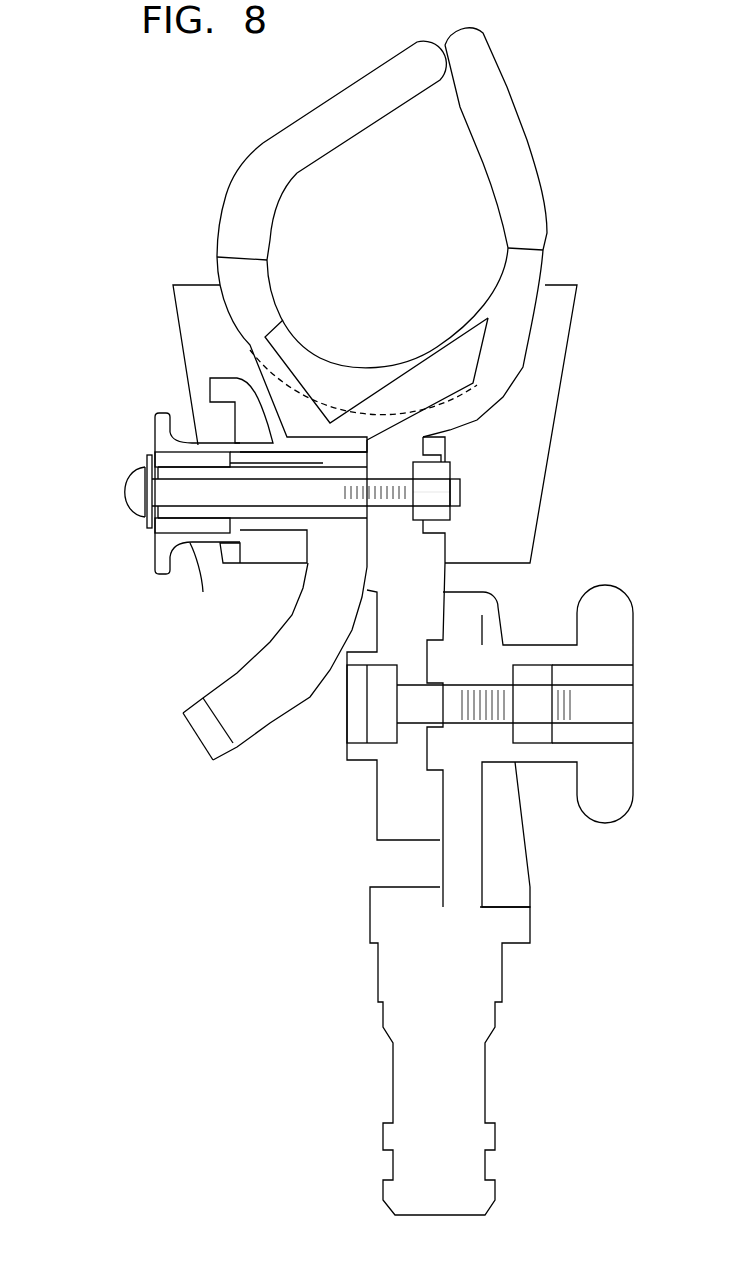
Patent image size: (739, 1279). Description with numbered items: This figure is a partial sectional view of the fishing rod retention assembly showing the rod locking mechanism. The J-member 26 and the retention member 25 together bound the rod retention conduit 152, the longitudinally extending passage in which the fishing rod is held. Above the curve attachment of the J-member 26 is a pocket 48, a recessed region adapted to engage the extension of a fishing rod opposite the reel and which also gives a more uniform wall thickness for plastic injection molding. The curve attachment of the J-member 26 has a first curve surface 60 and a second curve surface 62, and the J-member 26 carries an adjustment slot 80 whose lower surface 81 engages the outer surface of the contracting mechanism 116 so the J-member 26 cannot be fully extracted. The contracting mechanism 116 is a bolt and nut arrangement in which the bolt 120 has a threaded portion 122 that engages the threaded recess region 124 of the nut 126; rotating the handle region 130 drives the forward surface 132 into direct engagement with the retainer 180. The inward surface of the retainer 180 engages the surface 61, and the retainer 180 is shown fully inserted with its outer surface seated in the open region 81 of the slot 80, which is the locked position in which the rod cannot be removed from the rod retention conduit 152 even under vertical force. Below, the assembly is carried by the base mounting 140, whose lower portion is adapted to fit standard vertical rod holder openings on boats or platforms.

The retention member 25 is at (522, 268).
The J-member 26 is at (262, 183).
The pocket 48 is at (343, 390).
The first curve surface 60 is at (237, 672).
The surface 61 is at (235, 418).
The second curve surface 62 is at (272, 717).
The adjustment slot 80 is at (325, 639).
The lower surface 81 is at (223, 717).
The contracting mechanism 116 is at (153, 433).
The bolt 120 is at (140, 507).
The threaded portion 122 is at (460, 497).
The threaded recess region 124 is at (425, 500).
The nut 126 is at (445, 470).
The handle region 130 is at (138, 486).
The forward surface 132 is at (173, 515).
The base mounting 140 is at (510, 928).
The rod retention conduit 152 is at (401, 243).
The retainer 180 is at (203, 592).